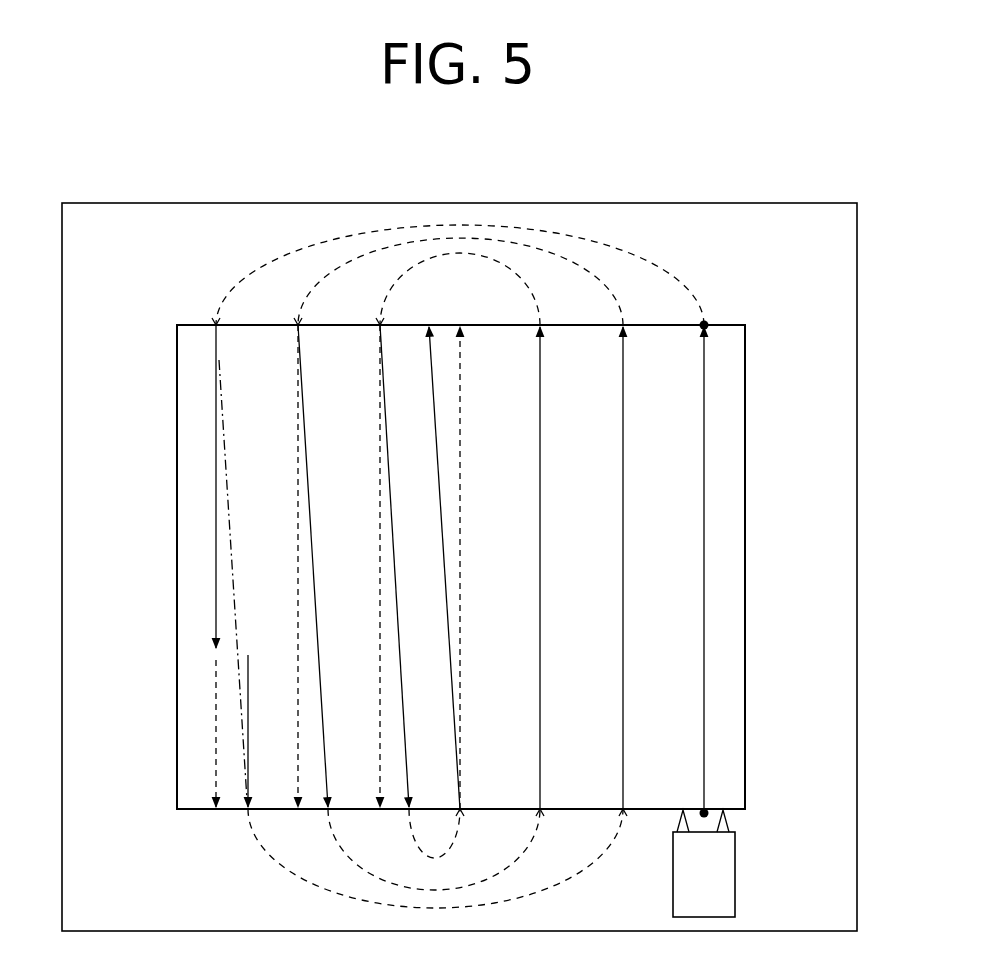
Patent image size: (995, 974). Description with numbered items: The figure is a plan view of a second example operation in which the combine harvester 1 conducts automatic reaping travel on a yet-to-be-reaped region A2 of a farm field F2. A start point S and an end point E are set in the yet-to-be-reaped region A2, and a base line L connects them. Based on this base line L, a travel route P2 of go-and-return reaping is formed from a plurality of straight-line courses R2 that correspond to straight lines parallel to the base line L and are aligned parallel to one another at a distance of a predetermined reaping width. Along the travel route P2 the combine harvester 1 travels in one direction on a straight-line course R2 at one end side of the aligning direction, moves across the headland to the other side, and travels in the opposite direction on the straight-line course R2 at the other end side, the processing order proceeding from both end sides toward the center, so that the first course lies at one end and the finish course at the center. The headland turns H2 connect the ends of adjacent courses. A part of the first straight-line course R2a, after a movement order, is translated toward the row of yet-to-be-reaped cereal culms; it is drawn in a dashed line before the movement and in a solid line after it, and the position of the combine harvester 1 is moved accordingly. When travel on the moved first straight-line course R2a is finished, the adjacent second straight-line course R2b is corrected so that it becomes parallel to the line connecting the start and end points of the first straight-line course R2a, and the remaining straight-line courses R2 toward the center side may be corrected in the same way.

The farm field F2 is at (125, 204).
The yet-to-be-reaped region A2 is at (214, 320).
The return path H2 is at (256, 247).
The end point E is at (710, 322).
The base line L is at (704, 483).
The travel route P2 is at (100, 488).
The straight-line courses R2 is at (185, 567).
The first straight-line course R2a is at (216, 521).
The second straight-line course R2b is at (297, 596).
The start point S is at (732, 820).
The combine harvester 1 is at (735, 874).